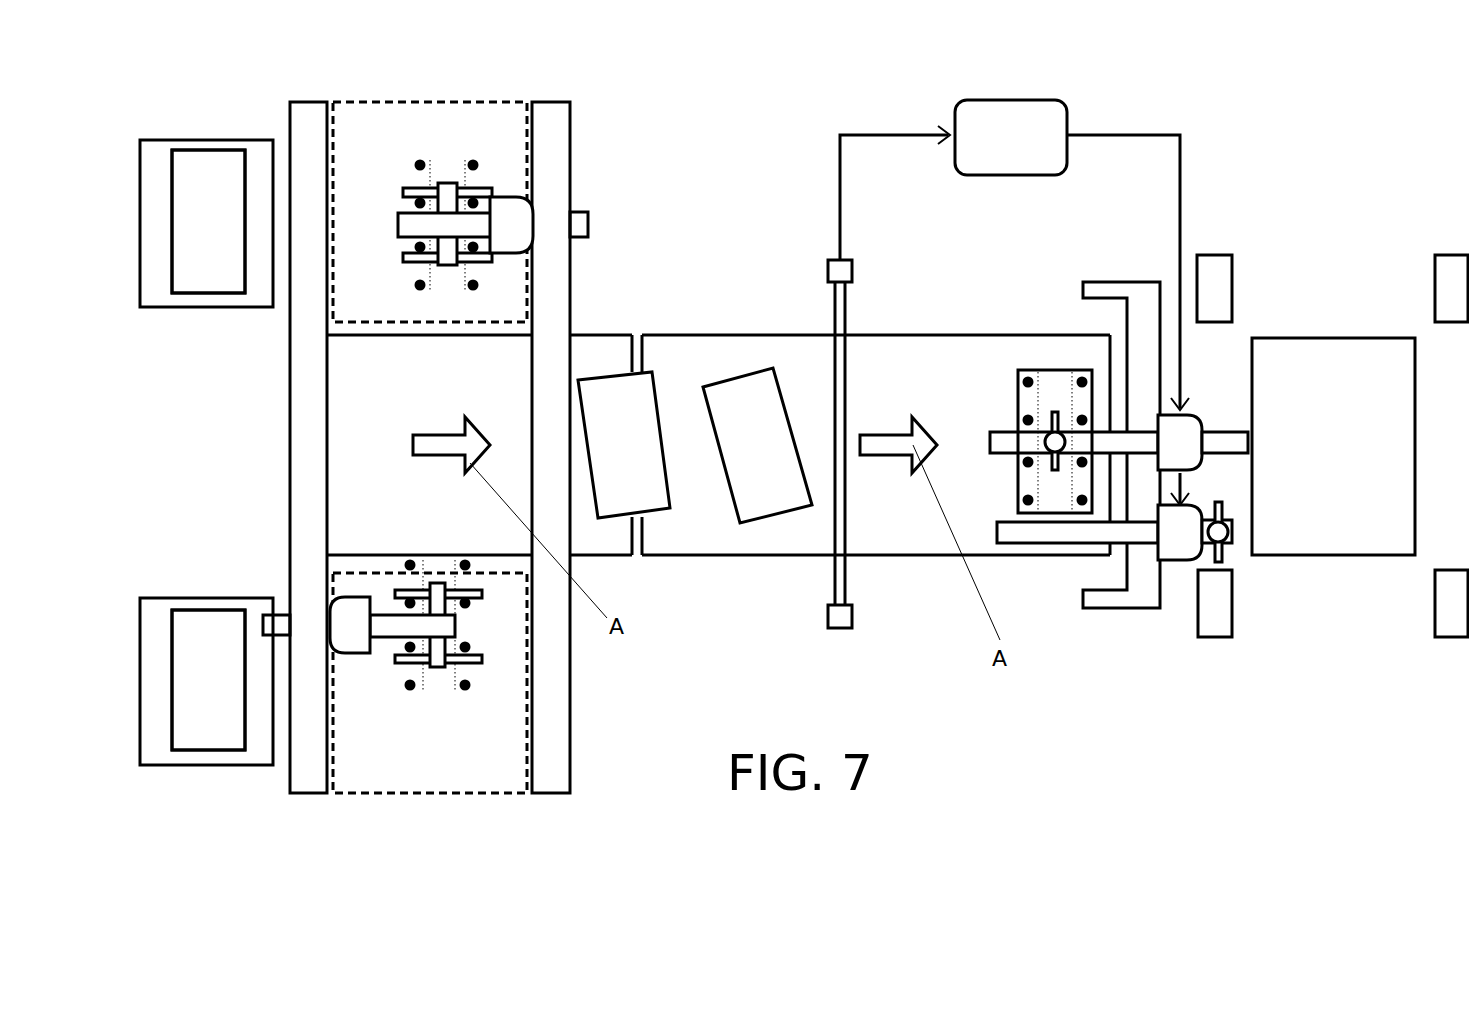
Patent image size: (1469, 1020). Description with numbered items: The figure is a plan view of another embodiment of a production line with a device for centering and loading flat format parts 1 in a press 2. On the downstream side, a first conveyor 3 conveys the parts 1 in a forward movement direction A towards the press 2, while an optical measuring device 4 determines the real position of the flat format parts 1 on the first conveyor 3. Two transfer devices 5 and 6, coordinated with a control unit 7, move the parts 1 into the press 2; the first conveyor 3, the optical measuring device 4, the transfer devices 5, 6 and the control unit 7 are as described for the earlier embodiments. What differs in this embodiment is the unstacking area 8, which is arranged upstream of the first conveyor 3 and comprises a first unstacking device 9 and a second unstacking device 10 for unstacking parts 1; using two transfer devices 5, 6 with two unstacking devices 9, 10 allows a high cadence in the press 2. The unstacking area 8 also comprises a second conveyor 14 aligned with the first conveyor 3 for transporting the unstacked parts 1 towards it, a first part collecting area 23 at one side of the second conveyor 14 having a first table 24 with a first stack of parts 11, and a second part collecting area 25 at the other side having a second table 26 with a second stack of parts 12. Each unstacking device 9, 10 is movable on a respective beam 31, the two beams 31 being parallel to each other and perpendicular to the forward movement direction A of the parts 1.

The flat format parts 1 is at (192, 177).
The press 2 is at (1347, 445).
The first conveyor 3 is at (963, 385).
The optical measuring device 4 is at (845, 510).
The transfer device 5 is at (1222, 440).
The transfer device 6 is at (1187, 533).
The control unit 7 is at (1010, 130).
The unstacking area 8 is at (272, 451).
The first unstacking device 9 is at (510, 225).
The second unstacking device 10 is at (487, 660).
The first stack of parts 11 is at (210, 222).
The second stack of parts 12 is at (218, 723).
The second conveyor 14 is at (437, 387).
The first part collecting area 23 is at (374, 170).
The first table 24 is at (228, 297).
The second part collecting area 25 is at (497, 732).
The second table 26 is at (155, 650).
The beam 31 is at (298, 150).